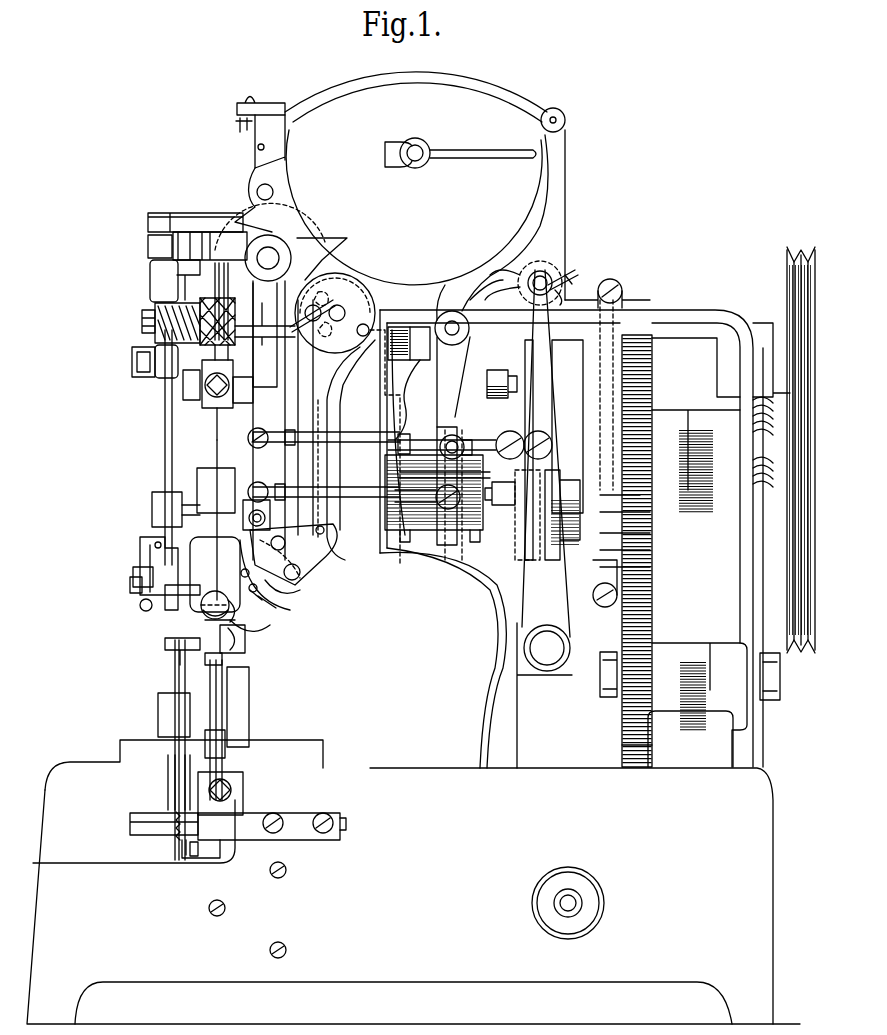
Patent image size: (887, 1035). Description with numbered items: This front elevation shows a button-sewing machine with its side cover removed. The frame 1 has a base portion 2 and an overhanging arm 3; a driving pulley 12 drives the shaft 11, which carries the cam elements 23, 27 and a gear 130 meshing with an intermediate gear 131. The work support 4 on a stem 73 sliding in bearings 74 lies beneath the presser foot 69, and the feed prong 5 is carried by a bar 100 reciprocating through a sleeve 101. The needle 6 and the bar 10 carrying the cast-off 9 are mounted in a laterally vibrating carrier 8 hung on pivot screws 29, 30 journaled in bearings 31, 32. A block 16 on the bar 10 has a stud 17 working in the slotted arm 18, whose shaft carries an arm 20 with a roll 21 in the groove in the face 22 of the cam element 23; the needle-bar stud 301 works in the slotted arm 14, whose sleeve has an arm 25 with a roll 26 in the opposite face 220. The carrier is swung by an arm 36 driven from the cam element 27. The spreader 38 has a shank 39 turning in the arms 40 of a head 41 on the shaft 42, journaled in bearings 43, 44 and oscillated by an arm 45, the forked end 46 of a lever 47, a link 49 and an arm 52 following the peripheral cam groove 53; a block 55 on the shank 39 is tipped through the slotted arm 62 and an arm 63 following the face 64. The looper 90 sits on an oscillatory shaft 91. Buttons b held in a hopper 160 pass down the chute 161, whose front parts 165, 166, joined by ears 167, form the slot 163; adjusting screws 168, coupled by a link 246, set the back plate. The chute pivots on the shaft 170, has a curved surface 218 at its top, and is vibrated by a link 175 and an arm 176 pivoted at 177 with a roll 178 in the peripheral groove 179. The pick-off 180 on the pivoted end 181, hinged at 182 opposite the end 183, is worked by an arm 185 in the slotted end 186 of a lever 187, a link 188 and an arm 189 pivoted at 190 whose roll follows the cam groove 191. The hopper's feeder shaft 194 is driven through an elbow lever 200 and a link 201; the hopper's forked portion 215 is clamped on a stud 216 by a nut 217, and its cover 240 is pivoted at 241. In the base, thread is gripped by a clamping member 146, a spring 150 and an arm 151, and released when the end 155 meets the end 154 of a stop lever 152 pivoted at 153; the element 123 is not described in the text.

The frame 1 is at (490, 717).
The base portion 2 is at (442, 980).
The overhanging head or arm 3 is at (403, 535).
The work support 4 is at (245, 650).
The feed prong 5 is at (205, 662).
The needle 6 is at (200, 605).
The carrier 8 is at (213, 310).
The hook-closer or cast-off 9 is at (212, 553).
The vertically-reciprocating bar 10 is at (215, 437).
The driving shaft 11 is at (498, 430).
The driving pulley 12 is at (795, 247).
The arm 14 is at (252, 405).
The block 16 is at (210, 364).
The stud 17 is at (190, 400).
The arm 18 is at (183, 390).
The arm 20 is at (652, 514).
The roll 21 is at (652, 534).
The face of cam element 22 is at (650, 551).
The cam element 23 is at (650, 568).
The arm 25 is at (505, 506).
The roll 26 is at (553, 545).
The cam element 27 is at (403, 540).
The pivot screw 29 is at (150, 325).
The pivot screw 30 is at (258, 308).
The bearing 31 is at (155, 312).
The bearing 32 is at (228, 348).
The arm 36 is at (388, 447).
The spreader 38 is at (214, 580).
The shank 39 is at (130, 583).
The arms 40 is at (140, 567).
The head or block 41 is at (145, 540).
The vertically-reciprocating shaft 42 is at (163, 428).
The bearing 43 is at (160, 495).
The bearing 44 is at (155, 270).
The arm 45 is at (200, 270).
The forked end 46 is at (205, 238).
The lever 47 is at (150, 250).
The link 49 is at (188, 218).
The arm 52 is at (396, 325).
The peripheral cam groove 53 is at (414, 325).
The block 55 is at (140, 605).
The arm 62 is at (132, 356).
The arm 63 is at (494, 372).
The face of cam element 64 is at (480, 528).
The presser foot 69 is at (205, 612).
The stem 73 is at (238, 665).
The bearings 74 is at (249, 695).
The looper 90 is at (180, 647).
The oscillatory shaft 91 is at (165, 735).
The bar 100 is at (225, 757).
The sleeve 101 is at (222, 710).
The dial 123 is at (605, 903).
The gear 130 is at (650, 497).
The intermediate gear 131 is at (648, 745).
The clamping member 146 is at (198, 800).
The spring 150 is at (183, 786).
The arm 151 is at (175, 770).
The stop lever 152 is at (252, 840).
The pivot 153 is at (323, 838).
The end of stop lever 154 is at (203, 842).
The end of arm 155 is at (186, 842).
The hopper 160 is at (417, 220).
The chute 161 is at (283, 580).
The slot 163 is at (290, 600).
The front piece part 165 is at (300, 380).
The front piece part 166 is at (300, 397).
The ears 167 is at (312, 560).
The adjusting screws 168 is at (340, 305).
The shaft 170 is at (270, 253).
The link 175 is at (462, 470).
The arm 176 is at (462, 318).
The pivot 177 is at (452, 310).
The roll 178 is at (450, 435).
The peripheral groove 179 is at (462, 552).
The pick-off member 180 is at (268, 622).
The pivoted lower end 181 is at (224, 592).
The pivot 182 is at (268, 598).
The end 183 is at (208, 620).
The arm 185 is at (205, 527).
The slotted end 186 is at (232, 508).
The lever 187 is at (260, 466).
The link 188 is at (418, 442).
The arm 189 is at (550, 610).
The pivot 190 is at (555, 648).
The cam groove 191 is at (542, 388).
The shaft 194 is at (422, 149).
The elbow lever 200 is at (612, 278).
The link 201 is at (645, 366).
The forked portion 215 is at (575, 285).
The stud 216 is at (540, 270).
The clamping nut 217 is at (572, 270).
The curved surface 218 is at (250, 205).
The opposite face of cam element 220 is at (517, 540).
The cover 240 is at (501, 72).
The pivot 241 is at (563, 113).
The link 246 is at (318, 562).
The stud or roll 301 is at (237, 393).
The shank-eyed buttons b is at (258, 631).